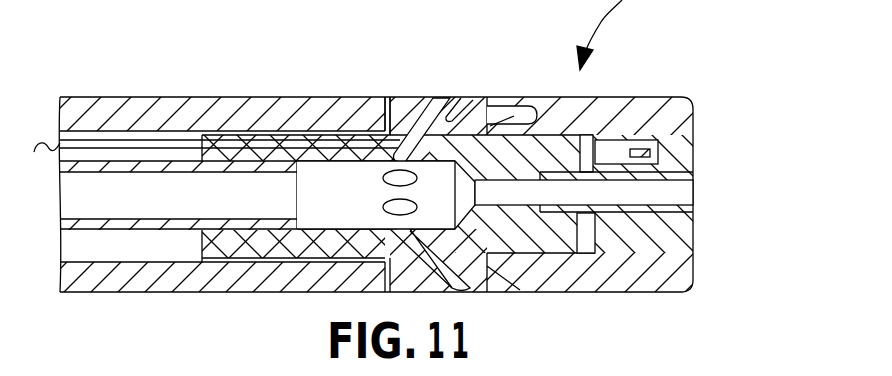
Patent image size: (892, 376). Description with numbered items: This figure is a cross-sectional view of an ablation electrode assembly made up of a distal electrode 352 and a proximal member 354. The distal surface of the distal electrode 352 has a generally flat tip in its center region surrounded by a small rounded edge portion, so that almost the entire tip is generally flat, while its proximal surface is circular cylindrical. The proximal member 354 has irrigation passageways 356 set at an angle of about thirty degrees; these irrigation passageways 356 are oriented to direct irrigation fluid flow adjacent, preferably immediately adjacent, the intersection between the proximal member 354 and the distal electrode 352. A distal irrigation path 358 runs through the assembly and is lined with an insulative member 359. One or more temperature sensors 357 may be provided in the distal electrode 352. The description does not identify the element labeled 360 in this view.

The distal electrode 352 is at (643, 123).
The proximal member 354 is at (409, 120).
The irrigation passageways 356 is at (460, 101).
The temperature sensors 357 is at (662, 151).
The distal irrigation path 358 is at (693, 197).
The insulative member 359 is at (695, 209).
The connector 360 is at (627, 375).